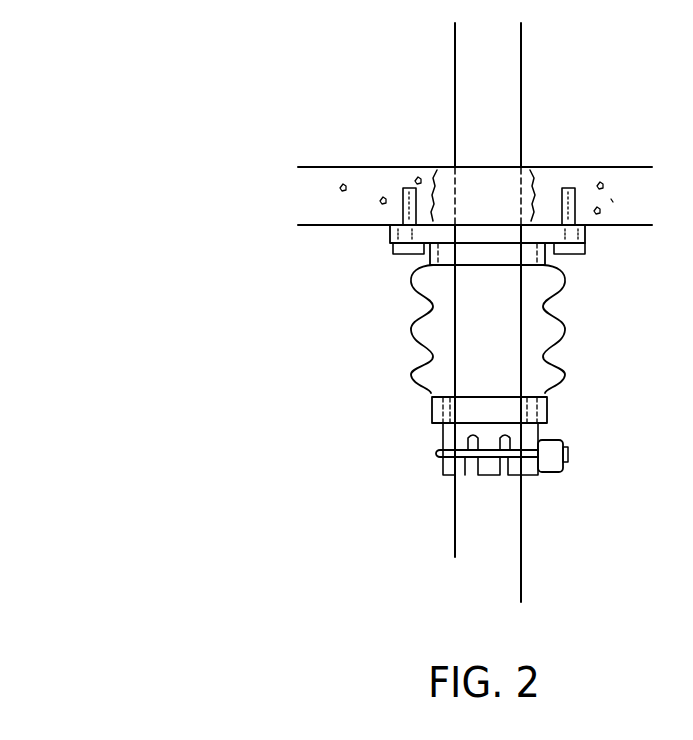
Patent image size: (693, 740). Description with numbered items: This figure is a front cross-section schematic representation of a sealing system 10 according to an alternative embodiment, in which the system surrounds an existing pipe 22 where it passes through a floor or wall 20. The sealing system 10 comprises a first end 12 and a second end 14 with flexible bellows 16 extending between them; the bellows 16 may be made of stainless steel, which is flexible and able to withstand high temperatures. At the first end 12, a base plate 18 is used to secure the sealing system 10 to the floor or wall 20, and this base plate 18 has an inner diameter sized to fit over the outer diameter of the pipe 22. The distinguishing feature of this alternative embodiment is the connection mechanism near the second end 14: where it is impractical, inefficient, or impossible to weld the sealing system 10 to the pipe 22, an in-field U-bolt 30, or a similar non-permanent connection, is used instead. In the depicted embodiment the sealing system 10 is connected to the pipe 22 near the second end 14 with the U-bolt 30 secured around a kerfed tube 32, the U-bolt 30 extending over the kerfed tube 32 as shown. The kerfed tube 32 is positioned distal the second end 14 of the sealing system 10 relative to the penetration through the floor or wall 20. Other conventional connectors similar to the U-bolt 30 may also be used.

The sealing system 10 is at (205, 210).
The first end 12 is at (550, 261).
The second end 14 is at (423, 412).
The flexible bellows 16 is at (565, 330).
The base plate 18 is at (390, 238).
The floor or wall 20 is at (475, 196).
The pipe 22 is at (488, 312).
The U-bolt 30 is at (436, 453).
The kerfed tube 32 is at (522, 478).